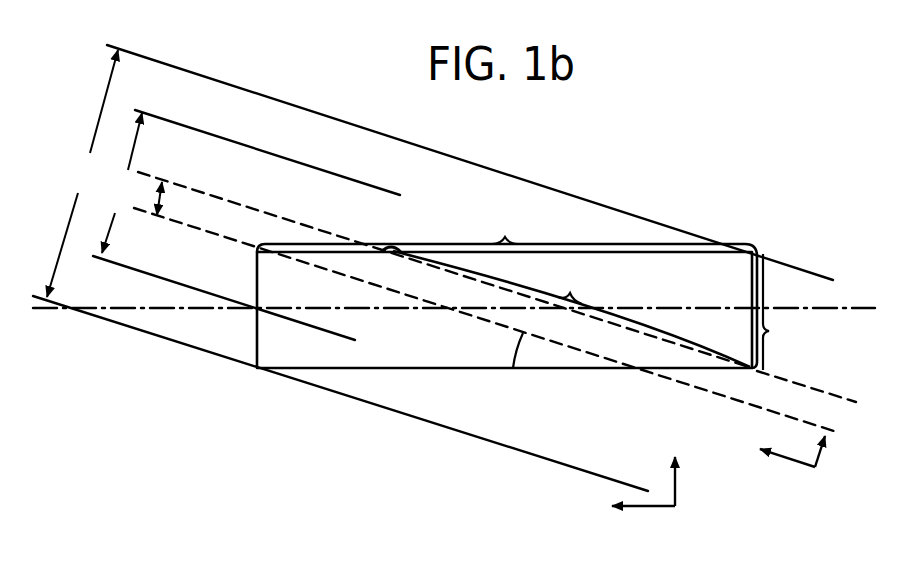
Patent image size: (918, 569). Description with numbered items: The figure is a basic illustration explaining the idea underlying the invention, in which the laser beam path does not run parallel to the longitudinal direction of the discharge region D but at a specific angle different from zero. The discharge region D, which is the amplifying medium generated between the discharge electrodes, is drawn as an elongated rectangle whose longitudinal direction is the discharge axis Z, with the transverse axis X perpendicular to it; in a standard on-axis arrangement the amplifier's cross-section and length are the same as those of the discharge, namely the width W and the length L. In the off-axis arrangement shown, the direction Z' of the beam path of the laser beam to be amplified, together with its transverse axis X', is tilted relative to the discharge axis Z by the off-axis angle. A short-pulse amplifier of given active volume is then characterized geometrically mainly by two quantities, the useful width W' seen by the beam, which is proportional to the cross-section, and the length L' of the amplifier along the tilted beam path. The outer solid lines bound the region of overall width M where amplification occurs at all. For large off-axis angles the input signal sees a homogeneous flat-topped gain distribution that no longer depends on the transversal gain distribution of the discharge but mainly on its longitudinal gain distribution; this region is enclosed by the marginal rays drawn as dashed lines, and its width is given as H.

The discharge region D is at (413, 355).
The width of the region where amplification occurs M is at (82, 173).
The useful width seen by the beam W' is at (122, 183).
The width of the homogeneous flat-topped gain region H is at (168, 203).
The length of the discharge L is at (505, 224).
The length of the amplifier L' is at (571, 283).
The width of the discharge W is at (776, 312).
The transverse axis of the discharge X is at (684, 478).
The longitudinal direction of the discharge Z is at (642, 525).
The transverse axis of the beam path X' is at (833, 451).
The direction of the beam path Z' is at (779, 469).